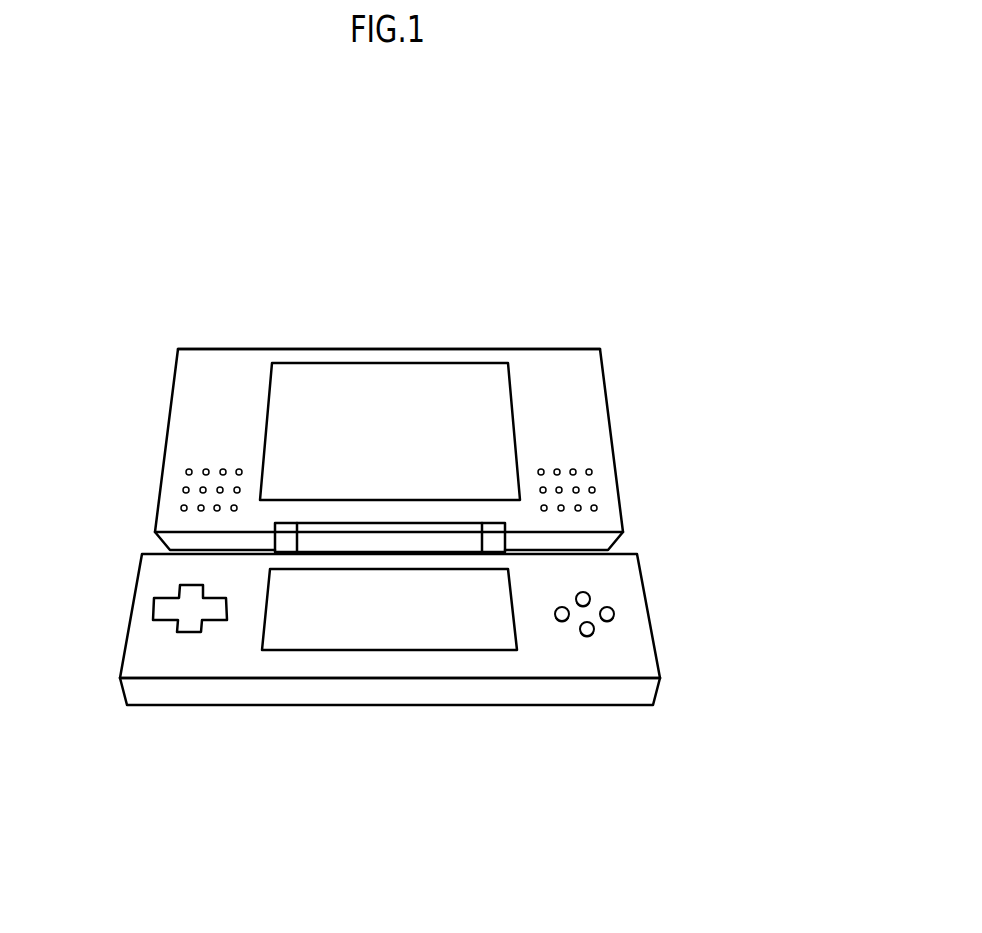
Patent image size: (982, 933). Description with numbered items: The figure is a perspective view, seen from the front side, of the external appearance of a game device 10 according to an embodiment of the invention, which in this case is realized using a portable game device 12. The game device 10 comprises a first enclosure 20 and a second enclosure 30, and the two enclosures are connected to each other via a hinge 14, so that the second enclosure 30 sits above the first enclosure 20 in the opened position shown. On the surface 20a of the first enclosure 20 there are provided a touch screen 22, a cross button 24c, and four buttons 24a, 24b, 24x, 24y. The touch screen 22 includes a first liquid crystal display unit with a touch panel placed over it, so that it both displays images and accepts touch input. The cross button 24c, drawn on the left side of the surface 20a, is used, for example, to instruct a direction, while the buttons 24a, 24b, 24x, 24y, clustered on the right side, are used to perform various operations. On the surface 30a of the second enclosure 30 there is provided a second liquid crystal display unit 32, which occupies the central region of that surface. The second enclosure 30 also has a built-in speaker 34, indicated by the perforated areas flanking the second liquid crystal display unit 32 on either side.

The game device 10 is at (452, 253).
The portable game device 12 is at (552, 302).
The hinge 14 is at (348, 524).
The first enclosure 20 is at (651, 627).
The surface of the first enclosure 20a is at (377, 669).
The touch screen 22 is at (482, 653).
The cross button 24c is at (153, 605).
The button 24x is at (590, 593).
The button 24a is at (614, 613).
The button 24y is at (561, 621).
The button 24b is at (587, 636).
The second enclosure 30 is at (610, 418).
The surface of the second enclosure 30a is at (216, 370).
The second liquid crystal display unit 32 is at (513, 400).
The speaker 34 is at (183, 488).